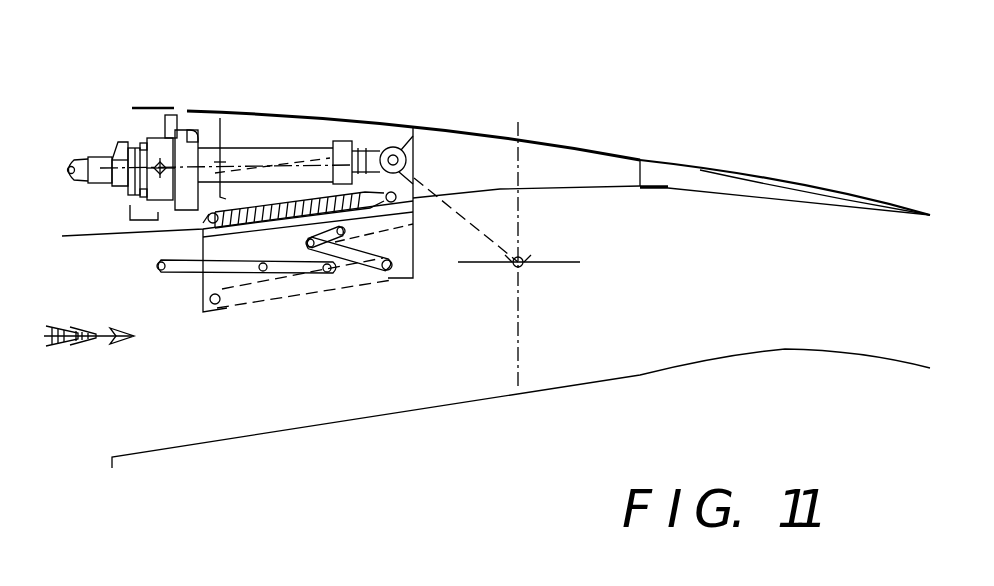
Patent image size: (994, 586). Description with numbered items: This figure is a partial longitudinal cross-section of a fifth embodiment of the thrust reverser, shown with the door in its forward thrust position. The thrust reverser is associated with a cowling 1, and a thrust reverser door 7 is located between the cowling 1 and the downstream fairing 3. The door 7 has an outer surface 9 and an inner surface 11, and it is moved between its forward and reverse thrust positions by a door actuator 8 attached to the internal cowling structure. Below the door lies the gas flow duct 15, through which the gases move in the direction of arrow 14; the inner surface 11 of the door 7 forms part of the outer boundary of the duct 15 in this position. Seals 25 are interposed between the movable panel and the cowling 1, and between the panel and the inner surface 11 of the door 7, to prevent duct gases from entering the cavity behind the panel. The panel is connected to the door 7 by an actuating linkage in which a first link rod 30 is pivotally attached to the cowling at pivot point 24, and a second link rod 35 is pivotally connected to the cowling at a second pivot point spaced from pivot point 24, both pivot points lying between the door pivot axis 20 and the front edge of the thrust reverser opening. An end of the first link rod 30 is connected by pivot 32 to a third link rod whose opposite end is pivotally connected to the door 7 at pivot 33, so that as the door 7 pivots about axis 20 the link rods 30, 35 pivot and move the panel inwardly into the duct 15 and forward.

The cowling 1 is at (145, 107).
The downstream fairing 3 is at (730, 172).
The thrust reverser door 7 is at (452, 157).
The door actuator 8 is at (322, 118).
The outer surface 9 is at (602, 148).
The inner surface 11 is at (556, 186).
The arrow 14 is at (89, 357).
The gas flow duct 15 is at (521, 368).
The door pivot axis 20 is at (526, 259).
The pivot point 24 is at (267, 276).
The seals 25 is at (205, 230).
The first link rod 30 is at (212, 277).
The pivot 32 is at (162, 271).
The pivot 33 is at (346, 232).
The second link rod 35 is at (351, 272).